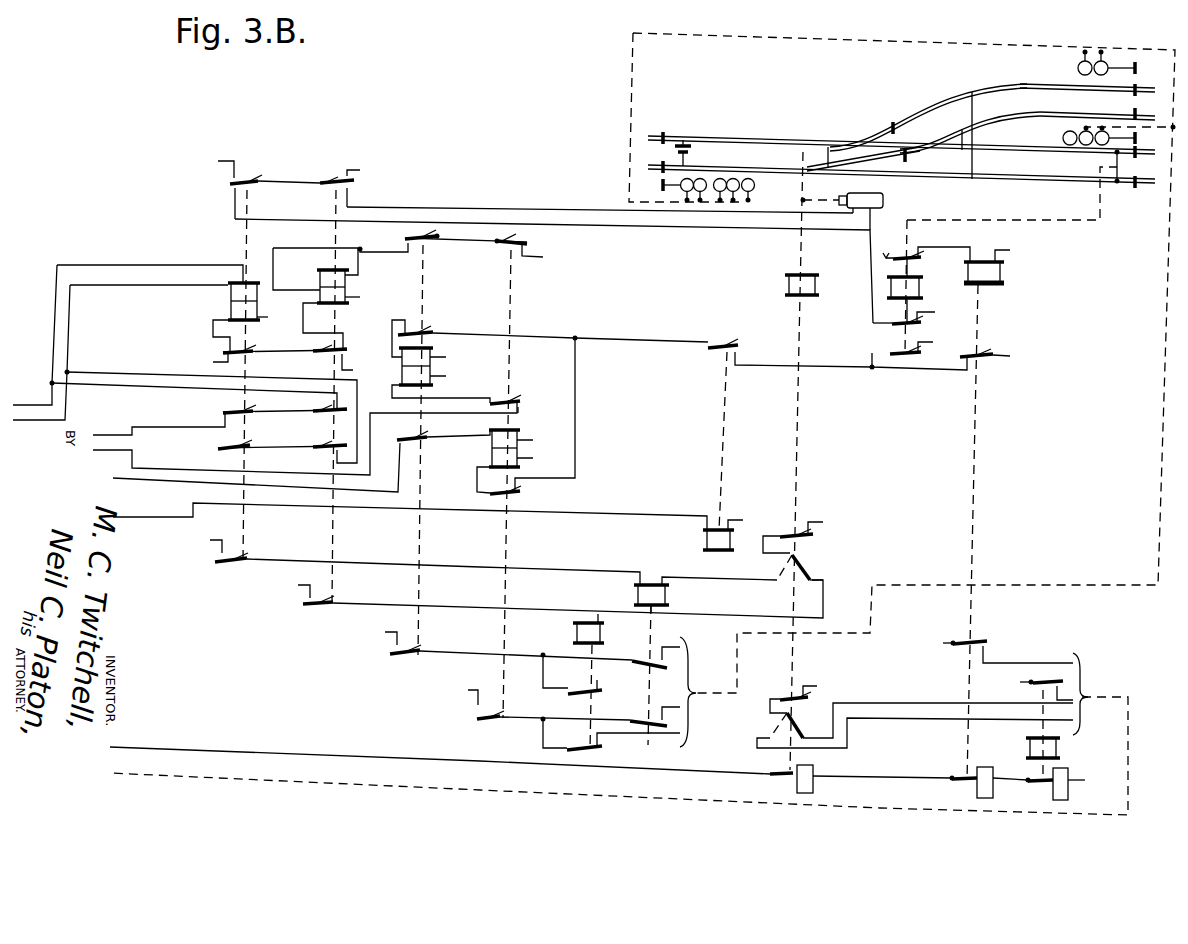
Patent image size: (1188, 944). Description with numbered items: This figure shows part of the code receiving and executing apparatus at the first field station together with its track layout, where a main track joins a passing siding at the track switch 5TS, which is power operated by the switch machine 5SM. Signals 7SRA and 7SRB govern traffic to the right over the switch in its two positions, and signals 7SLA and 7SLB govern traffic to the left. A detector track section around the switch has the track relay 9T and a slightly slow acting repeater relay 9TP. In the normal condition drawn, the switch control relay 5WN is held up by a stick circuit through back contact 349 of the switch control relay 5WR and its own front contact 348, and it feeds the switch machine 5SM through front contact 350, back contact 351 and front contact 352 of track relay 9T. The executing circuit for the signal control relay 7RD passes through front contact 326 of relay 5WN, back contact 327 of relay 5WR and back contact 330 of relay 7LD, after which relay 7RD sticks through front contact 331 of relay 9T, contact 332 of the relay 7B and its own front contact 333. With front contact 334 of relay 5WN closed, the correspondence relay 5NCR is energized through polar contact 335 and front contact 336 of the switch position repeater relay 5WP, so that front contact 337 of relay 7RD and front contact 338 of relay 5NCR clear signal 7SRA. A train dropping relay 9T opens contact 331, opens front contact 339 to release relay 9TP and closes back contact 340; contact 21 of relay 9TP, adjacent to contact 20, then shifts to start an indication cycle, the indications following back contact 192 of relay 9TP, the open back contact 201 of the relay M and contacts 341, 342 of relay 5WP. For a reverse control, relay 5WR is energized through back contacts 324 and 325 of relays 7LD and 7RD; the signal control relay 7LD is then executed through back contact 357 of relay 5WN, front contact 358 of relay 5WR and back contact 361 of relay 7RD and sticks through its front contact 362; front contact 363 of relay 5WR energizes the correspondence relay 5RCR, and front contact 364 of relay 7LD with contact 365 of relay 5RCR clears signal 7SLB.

The back contact of relay 5WR 351 is at (240, 186).
The front contact of relay 5WN 350 is at (344, 185).
The back contact of relay 5WR 349 is at (230, 357).
The front contact of relay 5WN 348 is at (338, 361).
The back contact of relay 5WR 327 is at (184, 420).
The front contact of relay 5WN 326 is at (319, 419).
The front contact of relay 5WR 358 is at (305, 439).
The back contact of relay 5WN 357 is at (319, 454).
The back contact of relay 7LD 324 is at (432, 240).
The back contact of relay 7RD 325 is at (510, 242).
The front contact of relay 7LD 362 is at (425, 335).
The back contact of relay 7RD 361 is at (518, 397).
The contact of relay 7B 332 is at (775, 354).
The back contact of relay 7LD 330 is at (286, 461).
The front contact of relay 7RD 333 is at (532, 421).
The front contact of track relay 9T 339 is at (923, 253).
The front contact of track relay 9T 352 is at (912, 314).
The front contact of track relay 9T 331 is at (927, 352).
The back contact 340 is at (985, 365).
The front contact of relay 5WR 363 is at (410, 560).
The front contact of relay 5WN 334 is at (545, 603).
The front contact of relay 7LD 364 is at (493, 650).
The front contact of relay 7RD 337 is at (535, 712).
The front contact of relay 5NCR 338 is at (611, 734).
The contact of relay 5RCR 365 is at (650, 660).
The front contact of relay 5WP 336 is at (802, 535).
The polar contact of relay 5WP 335 is at (810, 567).
The contact of switch position repeating relay 5WP 341 is at (798, 694).
The contact of switch position repeating relay 5WP 342 is at (915, 725).
The back contact of track repeating relay 9TP 192 is at (965, 640).
The back contact of relay M 201 is at (1040, 694).
The contact of track repeater relay 9TP 21 is at (965, 786).
The contact 20 is at (1069, 786).
The switch control relay 5WR is at (171, 308).
The switch control relay 5WN is at (340, 296).
The signal control relay 7LD is at (441, 371).
The signal control relay 7RD is at (492, 453).
The switch position repeater relay 5WP is at (816, 274).
The track relay 9T is at (917, 291).
The track repeater relay 9TP is at (999, 263).
The signal control relay 7B is at (714, 531).
The correspondence relay 5RCR is at (681, 594).
The correspondence relay 5NCR is at (562, 628).
The relay M is at (1054, 748).
The track switch 5TS is at (830, 148).
The switch machine 5SM is at (880, 202).
The signal 7SRA is at (756, 187).
The signal 7SRB is at (680, 188).
The signal 7SLA is at (1096, 133).
The signal 7SLB is at (1083, 64).